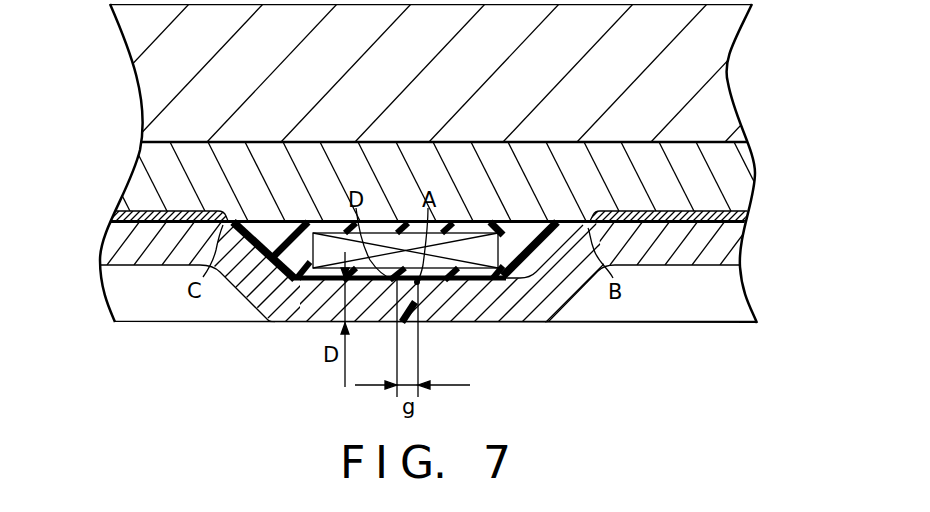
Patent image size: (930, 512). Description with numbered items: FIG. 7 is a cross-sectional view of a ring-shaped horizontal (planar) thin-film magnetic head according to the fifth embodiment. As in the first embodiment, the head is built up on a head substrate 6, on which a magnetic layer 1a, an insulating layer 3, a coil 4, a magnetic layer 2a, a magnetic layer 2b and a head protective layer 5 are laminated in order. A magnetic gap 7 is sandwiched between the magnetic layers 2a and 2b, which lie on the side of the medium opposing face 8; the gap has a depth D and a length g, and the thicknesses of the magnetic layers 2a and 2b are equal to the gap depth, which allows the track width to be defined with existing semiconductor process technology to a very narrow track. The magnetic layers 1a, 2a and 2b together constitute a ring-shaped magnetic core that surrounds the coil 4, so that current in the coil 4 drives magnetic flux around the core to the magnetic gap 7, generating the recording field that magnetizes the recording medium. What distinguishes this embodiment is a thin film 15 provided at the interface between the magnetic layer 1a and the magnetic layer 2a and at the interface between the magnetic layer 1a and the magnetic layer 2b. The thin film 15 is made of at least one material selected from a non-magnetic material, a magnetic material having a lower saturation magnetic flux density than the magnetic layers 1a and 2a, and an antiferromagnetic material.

The head substrate 6 is at (720, 50).
The magnetic layer 1a is at (733, 172).
The thin film 15 is at (747, 213).
The magnetic layer 2a is at (114, 250).
The magnetic layer 2b is at (740, 237).
The head protective layer 5 is at (138, 303).
The medium opposing face 8 is at (297, 308).
The magnetic gap 7 is at (402, 302).
The coil 4 is at (482, 256).
The insulating layer 3 is at (540, 255).